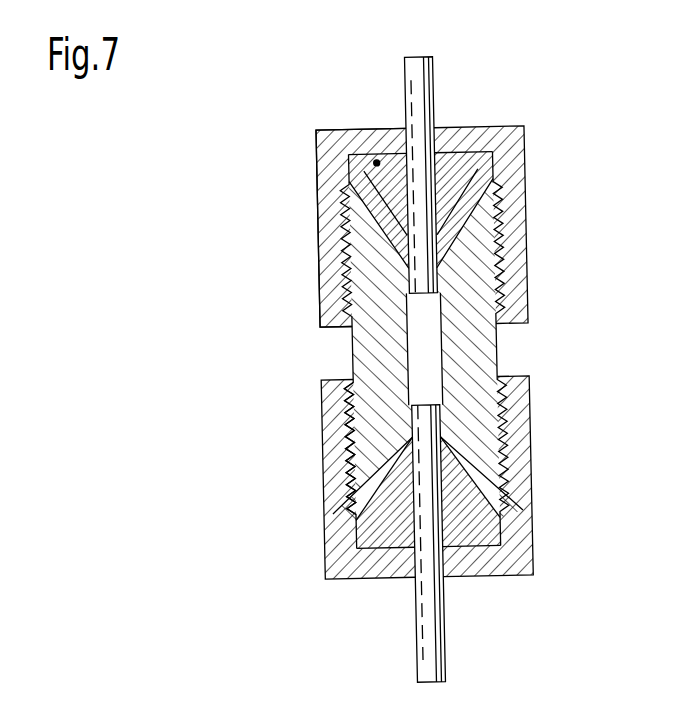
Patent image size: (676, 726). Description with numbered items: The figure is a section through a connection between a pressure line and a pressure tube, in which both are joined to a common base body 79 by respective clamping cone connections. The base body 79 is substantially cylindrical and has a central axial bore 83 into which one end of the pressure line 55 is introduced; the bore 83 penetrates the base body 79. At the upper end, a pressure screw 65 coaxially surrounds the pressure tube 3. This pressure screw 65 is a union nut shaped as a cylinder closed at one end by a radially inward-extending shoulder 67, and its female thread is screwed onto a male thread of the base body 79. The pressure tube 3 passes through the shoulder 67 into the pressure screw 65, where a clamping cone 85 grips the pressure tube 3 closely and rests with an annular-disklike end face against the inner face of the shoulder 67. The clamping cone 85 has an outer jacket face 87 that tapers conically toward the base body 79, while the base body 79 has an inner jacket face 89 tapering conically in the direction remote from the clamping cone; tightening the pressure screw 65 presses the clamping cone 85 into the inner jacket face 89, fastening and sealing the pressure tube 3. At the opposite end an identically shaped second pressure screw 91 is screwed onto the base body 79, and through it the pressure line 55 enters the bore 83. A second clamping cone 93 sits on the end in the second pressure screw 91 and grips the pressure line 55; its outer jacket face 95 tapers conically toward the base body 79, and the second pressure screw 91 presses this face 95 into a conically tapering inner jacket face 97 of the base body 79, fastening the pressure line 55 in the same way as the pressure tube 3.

The pressure tube 3 is at (432, 80).
The pressure line 55 is at (428, 650).
The pressure screw 65 is at (317, 197).
The shoulder 67 is at (378, 165).
The base body 79 is at (380, 353).
The bore 83 is at (425, 362).
The clamping cone 85 is at (482, 165).
The outer jacket face 87 is at (338, 248).
The inner jacket face 89 is at (480, 245).
The second pressure screw 91 is at (527, 533).
The second clamping cone 93 is at (355, 514).
The outer jacket face 95 is at (480, 478).
The inner jacket face 97 is at (362, 462).